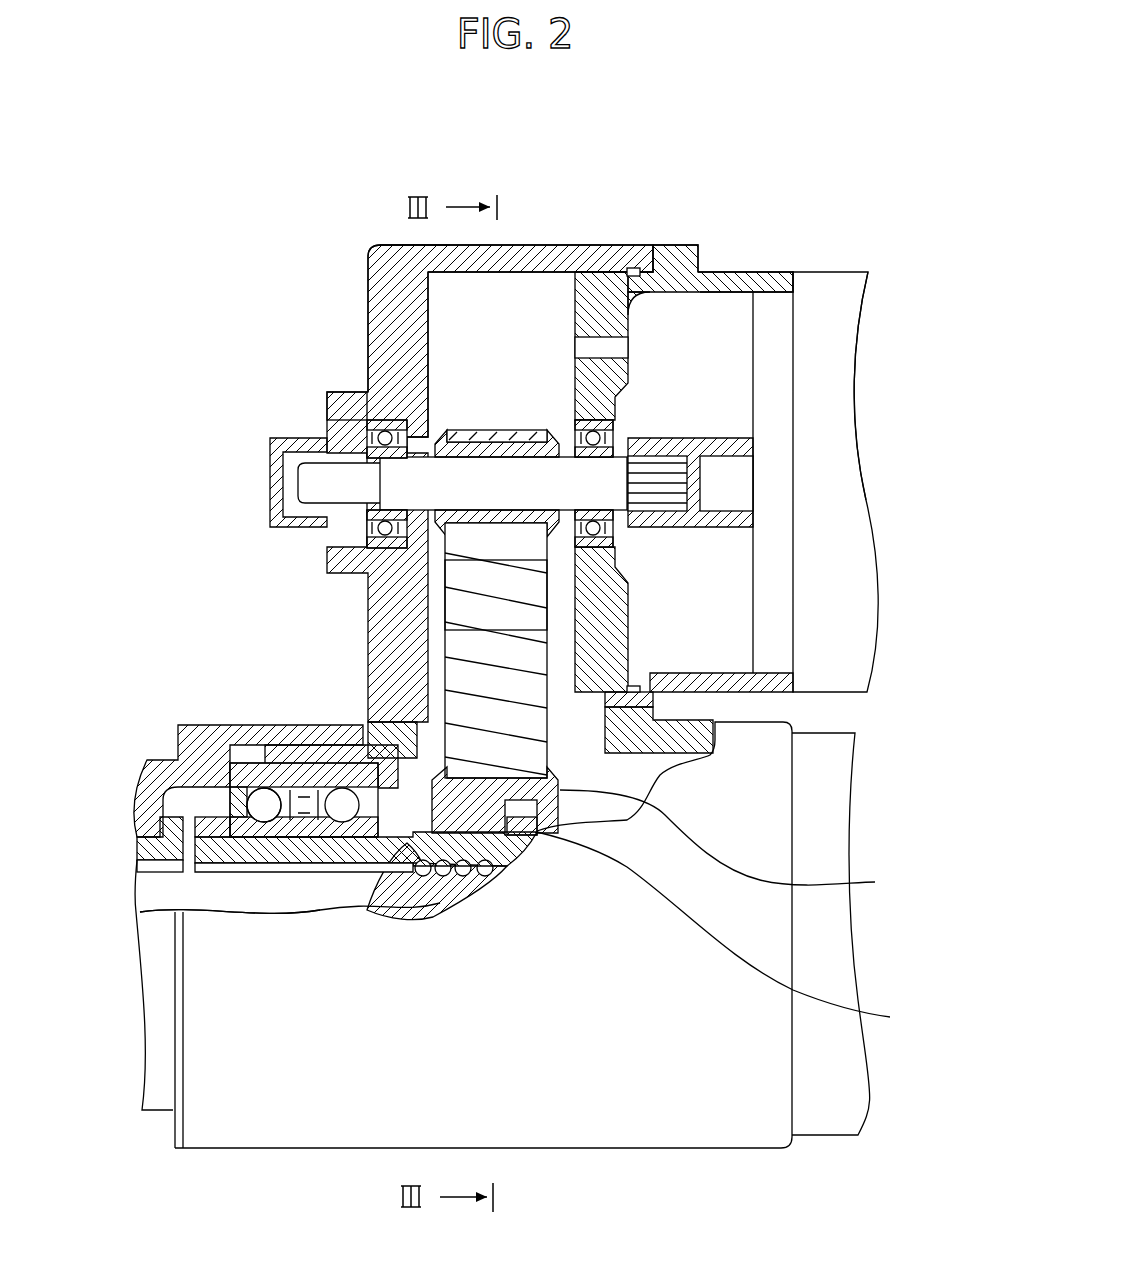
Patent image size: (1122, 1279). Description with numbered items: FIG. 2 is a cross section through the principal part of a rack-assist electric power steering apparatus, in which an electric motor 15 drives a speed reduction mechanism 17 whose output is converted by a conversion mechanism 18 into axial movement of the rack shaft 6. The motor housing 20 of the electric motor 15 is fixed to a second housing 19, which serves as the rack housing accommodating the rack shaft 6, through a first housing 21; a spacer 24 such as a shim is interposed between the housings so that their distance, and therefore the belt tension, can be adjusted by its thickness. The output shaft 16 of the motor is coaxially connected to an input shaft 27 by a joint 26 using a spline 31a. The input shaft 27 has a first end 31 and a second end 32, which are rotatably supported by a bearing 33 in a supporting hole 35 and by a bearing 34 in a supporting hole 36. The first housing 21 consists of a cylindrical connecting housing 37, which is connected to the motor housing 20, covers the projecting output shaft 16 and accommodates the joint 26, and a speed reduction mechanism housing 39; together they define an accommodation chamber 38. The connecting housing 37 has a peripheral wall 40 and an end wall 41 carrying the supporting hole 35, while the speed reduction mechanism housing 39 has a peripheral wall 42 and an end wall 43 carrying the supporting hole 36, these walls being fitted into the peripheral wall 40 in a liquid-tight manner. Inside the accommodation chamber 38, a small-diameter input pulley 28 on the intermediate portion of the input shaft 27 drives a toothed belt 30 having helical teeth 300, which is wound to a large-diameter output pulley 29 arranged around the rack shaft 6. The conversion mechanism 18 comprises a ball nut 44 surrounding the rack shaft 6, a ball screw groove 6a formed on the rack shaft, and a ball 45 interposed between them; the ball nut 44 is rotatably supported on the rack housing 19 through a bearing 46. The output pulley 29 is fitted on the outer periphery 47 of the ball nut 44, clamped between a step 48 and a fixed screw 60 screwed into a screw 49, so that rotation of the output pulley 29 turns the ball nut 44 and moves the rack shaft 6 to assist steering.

The rack shaft 6 is at (148, 886).
The ball screw groove 6a is at (355, 893).
The electric motor 15 is at (870, 326).
The output shaft 16 is at (741, 480).
The speed reduction mechanism 17 is at (418, 435).
The conversion mechanism 18 is at (297, 876).
The second housing 19 is at (715, 741).
The motor housing 20 is at (828, 272).
The first housing 21 is at (712, 137).
The spacer 24 is at (397, 712).
The joint 26 is at (697, 418).
The input shaft 27 is at (490, 420).
The input pulley 28 is at (368, 390).
The output pulley 29 is at (740, 844).
The toothed belt 30 is at (440, 592).
The helical teeth 300 is at (487, 620).
The first end 31 is at (525, 458).
The spline 31a is at (667, 470).
The second end 32 is at (327, 483).
The bearing 33 is at (607, 530).
The bearing 34 is at (383, 533).
The supporting hole 35 is at (613, 428).
The supporting hole 36 is at (380, 433).
The connecting housing 37 is at (720, 268).
The accommodation chamber 38 is at (468, 302).
The speed reduction mechanism housing 39 is at (556, 242).
The peripheral wall 40 is at (738, 285).
The end wall 41 is at (577, 303).
The peripheral wall 42 is at (450, 242).
The end wall 43 is at (377, 355).
The ball nut 44 is at (245, 982).
The ball 45 is at (482, 880).
The bearing 46 is at (266, 803).
The outer periphery 47 is at (383, 788).
The step 48 is at (403, 822).
The screw 49 is at (640, 690).
The fixed screw 60 is at (734, 934).